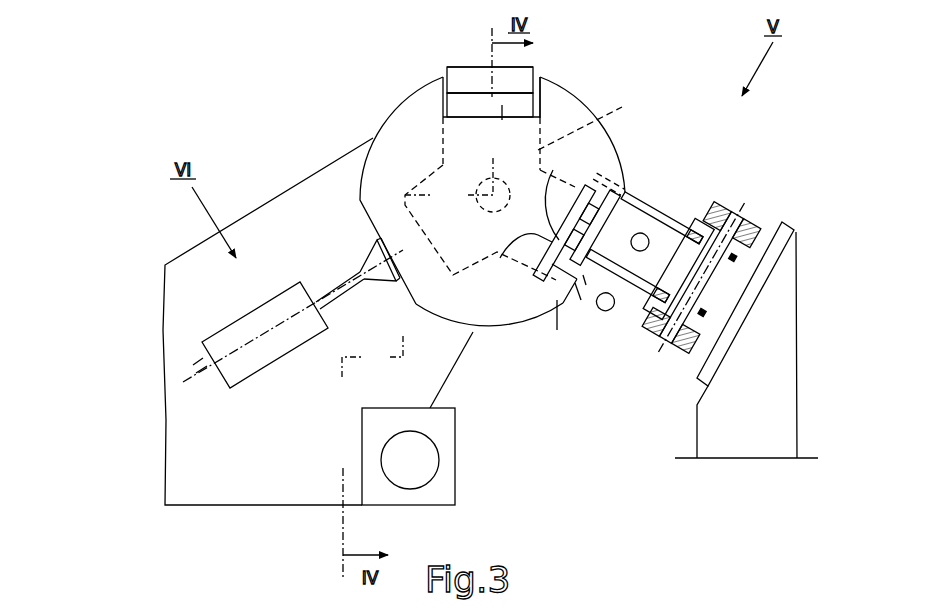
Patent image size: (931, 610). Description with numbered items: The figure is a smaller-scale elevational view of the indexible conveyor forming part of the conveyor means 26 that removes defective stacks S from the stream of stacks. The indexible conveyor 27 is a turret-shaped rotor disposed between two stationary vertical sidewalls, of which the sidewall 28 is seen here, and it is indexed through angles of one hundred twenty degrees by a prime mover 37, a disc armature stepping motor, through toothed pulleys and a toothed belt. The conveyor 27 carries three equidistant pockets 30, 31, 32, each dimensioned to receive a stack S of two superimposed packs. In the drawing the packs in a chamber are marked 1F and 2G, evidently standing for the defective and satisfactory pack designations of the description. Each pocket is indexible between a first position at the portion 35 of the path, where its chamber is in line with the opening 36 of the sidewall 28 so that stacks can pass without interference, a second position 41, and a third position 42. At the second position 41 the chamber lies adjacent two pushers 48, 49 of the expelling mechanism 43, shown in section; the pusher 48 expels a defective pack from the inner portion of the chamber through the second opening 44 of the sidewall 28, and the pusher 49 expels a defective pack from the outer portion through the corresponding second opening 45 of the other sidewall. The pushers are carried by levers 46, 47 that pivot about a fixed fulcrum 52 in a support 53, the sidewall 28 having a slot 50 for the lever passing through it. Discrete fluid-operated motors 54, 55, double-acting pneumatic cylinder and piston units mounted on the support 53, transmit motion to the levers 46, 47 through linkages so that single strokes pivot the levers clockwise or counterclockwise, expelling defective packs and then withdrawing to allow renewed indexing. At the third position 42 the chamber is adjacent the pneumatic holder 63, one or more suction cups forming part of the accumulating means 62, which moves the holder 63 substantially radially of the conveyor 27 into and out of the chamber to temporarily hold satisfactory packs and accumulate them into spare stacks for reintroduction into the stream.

The conveyor means 26 is at (590, 89).
The indexible conveyor 27 is at (524, 182).
The stationary vertical sidewall 28 is at (533, 329).
The pocket 30 is at (441, 70).
The pocket 31 is at (417, 303).
The pocket 32 is at (581, 300).
The predetermined portion of the path 35 is at (521, 61).
The opening 36 is at (447, 90).
The prime mover 37 is at (430, 457).
The second position 41 is at (630, 184).
The third position 42 is at (340, 236).
The expelling mechanism 43 is at (800, 276).
The second opening 44 is at (557, 330).
The second opening 45 is at (626, 196).
The lever 46 is at (704, 316).
The lever 47 is at (740, 260).
The pusher 48 is at (537, 253).
The pusher 49 is at (555, 171).
The slot 50 is at (585, 276).
The fixed fulcrum 52 is at (735, 212).
The support 53 is at (780, 415).
The fluid-operated motor 54 is at (612, 311).
The fluid-operated motor 55 is at (645, 238).
The accumulating means 62 is at (224, 316).
The pneumatic holder 63 is at (383, 270).
The workpiece station 1F is at (460, 77).
The workpiece station 2G is at (480, 108).
The stack S is at (502, 120).